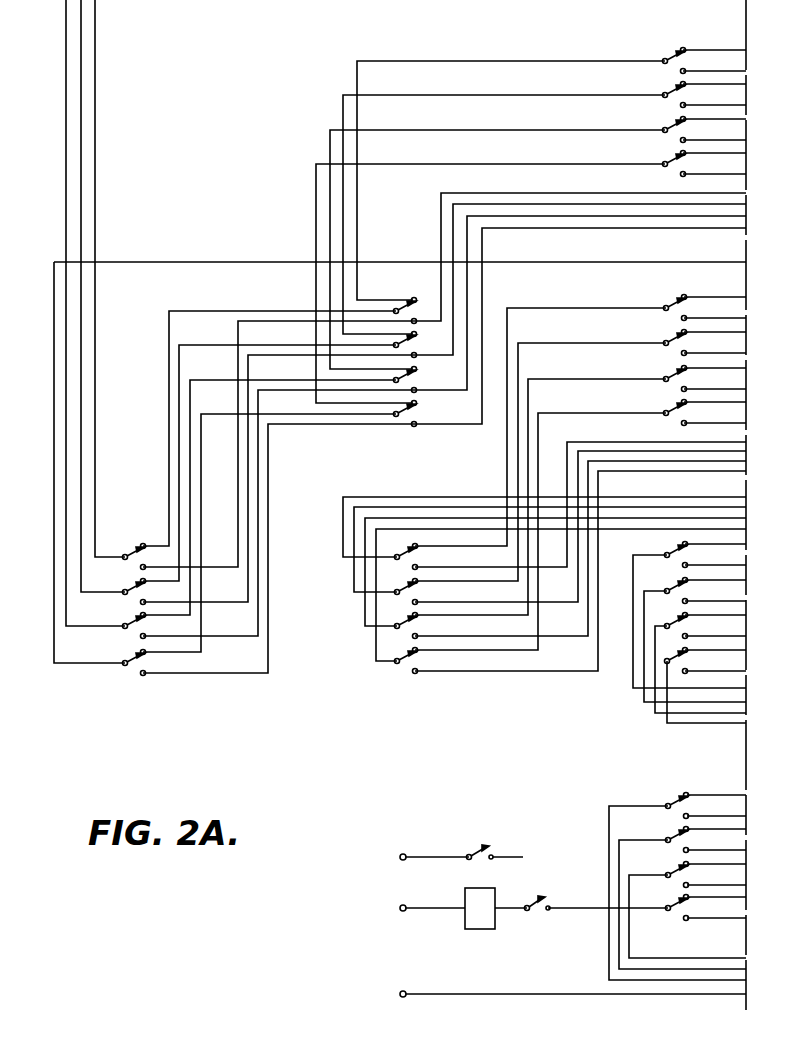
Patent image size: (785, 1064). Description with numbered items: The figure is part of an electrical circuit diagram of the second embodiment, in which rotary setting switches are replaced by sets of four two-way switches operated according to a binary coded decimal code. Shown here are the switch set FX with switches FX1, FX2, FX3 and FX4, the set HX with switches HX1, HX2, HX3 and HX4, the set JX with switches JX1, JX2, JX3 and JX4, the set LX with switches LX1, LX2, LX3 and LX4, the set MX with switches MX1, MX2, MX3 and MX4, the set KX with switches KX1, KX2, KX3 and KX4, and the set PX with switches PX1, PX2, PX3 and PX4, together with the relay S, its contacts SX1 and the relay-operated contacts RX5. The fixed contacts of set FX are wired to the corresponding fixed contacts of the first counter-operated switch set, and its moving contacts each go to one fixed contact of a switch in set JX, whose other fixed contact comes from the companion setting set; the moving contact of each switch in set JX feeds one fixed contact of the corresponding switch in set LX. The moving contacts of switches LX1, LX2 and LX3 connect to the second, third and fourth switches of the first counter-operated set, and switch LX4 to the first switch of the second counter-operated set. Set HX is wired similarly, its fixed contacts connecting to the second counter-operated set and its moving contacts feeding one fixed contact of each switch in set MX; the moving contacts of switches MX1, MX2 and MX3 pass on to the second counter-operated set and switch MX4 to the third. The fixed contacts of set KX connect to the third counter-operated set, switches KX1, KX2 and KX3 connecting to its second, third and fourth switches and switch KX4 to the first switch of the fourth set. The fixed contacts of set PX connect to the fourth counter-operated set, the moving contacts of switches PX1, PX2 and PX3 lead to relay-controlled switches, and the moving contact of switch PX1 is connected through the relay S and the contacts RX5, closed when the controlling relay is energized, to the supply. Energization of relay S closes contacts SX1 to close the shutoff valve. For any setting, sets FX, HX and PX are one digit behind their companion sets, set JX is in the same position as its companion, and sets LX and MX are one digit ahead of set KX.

The switch set FX is at (652, 96).
The two-way switch FX1 is at (662, 57).
The two-way switch FX2 is at (662, 92).
The two-way switch FX3 is at (662, 127).
The two-way switch FX4 is at (662, 161).
The switch set HX is at (668, 346).
The two-way switch HX1 is at (670, 304).
The two-way switch HX2 is at (668, 339).
The two-way switch HX3 is at (668, 375).
The two-way switch HX4 is at (668, 409).
The switch set JX is at (435, 373).
The two-way switch JX1 is at (403, 306).
The two-way switch JX2 is at (412, 345).
The two-way switch JX3 is at (414, 380).
The two-way switch JX4 is at (405, 418).
The switch set LX is at (115, 608).
The two-way switch LX1 is at (131, 552).
The two-way switch LX2 is at (128, 588).
The two-way switch LX3 is at (124, 622).
The two-way switch LX4 is at (124, 659).
The switch set MX is at (358, 622).
The two-way switch MX1 is at (393, 556).
The two-way switch MX2 is at (393, 590).
The two-way switch MX3 is at (393, 625).
The two-way switch MX4 is at (393, 660).
The switch set KX is at (642, 663).
The two-way switch KX1 is at (680, 557).
The two-way switch KX2 is at (677, 592).
The two-way switch KX3 is at (677, 627).
The two-way switch KX4 is at (677, 662).
The switch set PX is at (654, 861).
The two-way switch PX1 is at (670, 800).
The two-way switch PX2 is at (670, 836).
The two-way switch PX3 is at (670, 870).
The two-way switch PX4 is at (673, 895).
The contacts SX1 is at (478, 852).
The relay S is at (470, 900).
The contacts RX5 is at (534, 900).